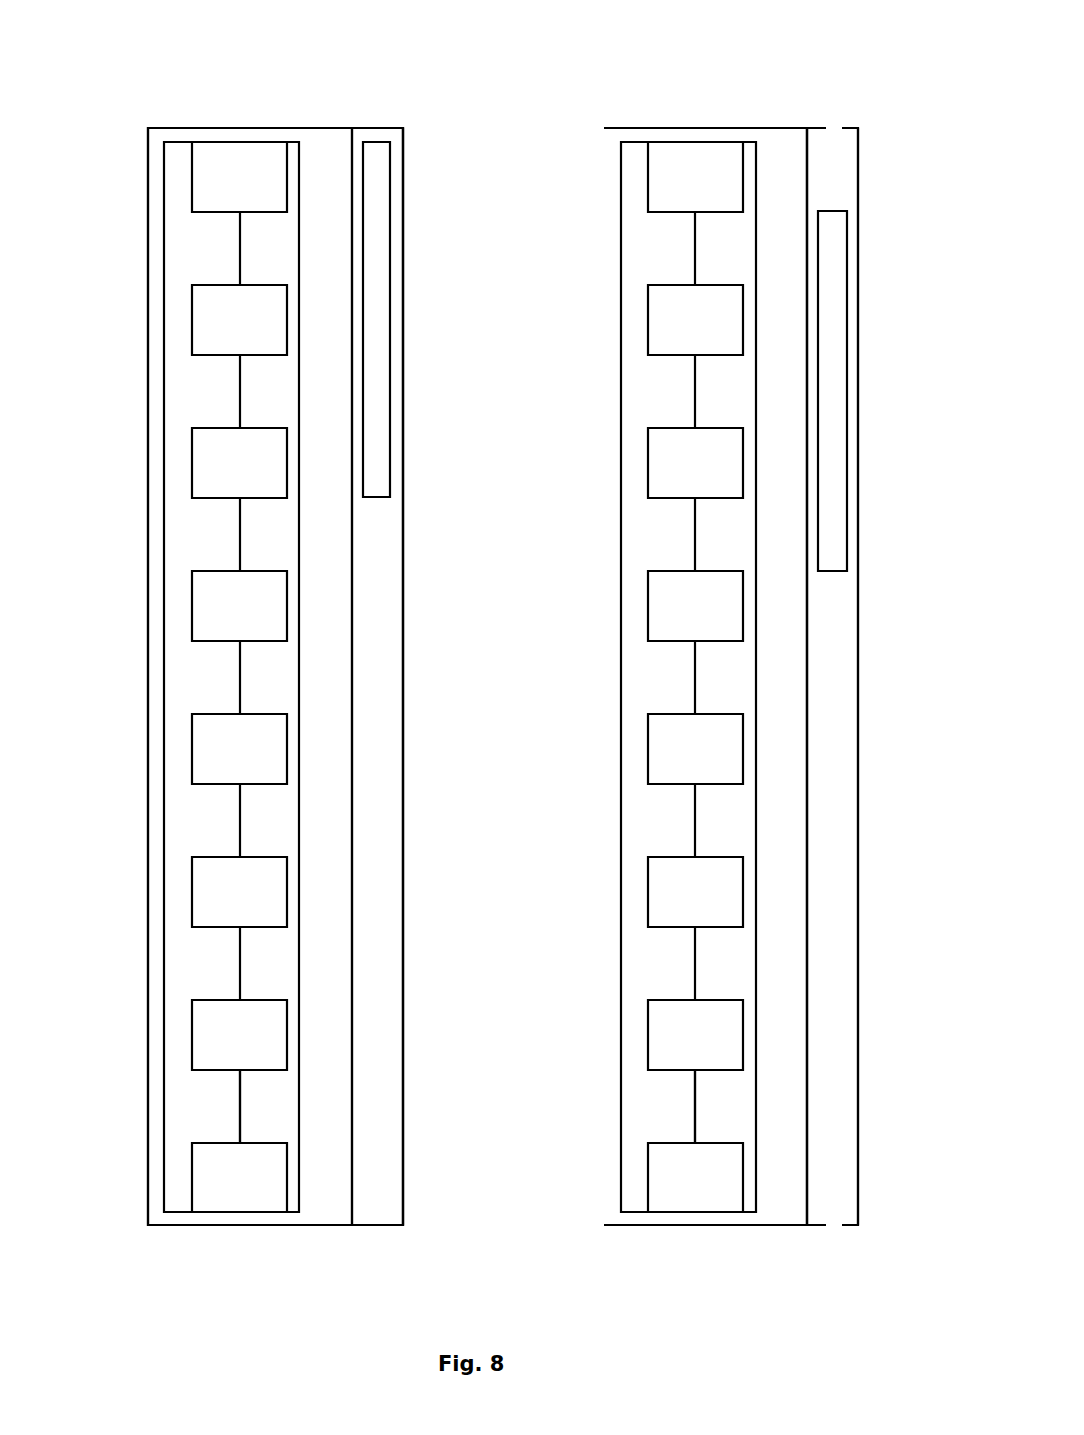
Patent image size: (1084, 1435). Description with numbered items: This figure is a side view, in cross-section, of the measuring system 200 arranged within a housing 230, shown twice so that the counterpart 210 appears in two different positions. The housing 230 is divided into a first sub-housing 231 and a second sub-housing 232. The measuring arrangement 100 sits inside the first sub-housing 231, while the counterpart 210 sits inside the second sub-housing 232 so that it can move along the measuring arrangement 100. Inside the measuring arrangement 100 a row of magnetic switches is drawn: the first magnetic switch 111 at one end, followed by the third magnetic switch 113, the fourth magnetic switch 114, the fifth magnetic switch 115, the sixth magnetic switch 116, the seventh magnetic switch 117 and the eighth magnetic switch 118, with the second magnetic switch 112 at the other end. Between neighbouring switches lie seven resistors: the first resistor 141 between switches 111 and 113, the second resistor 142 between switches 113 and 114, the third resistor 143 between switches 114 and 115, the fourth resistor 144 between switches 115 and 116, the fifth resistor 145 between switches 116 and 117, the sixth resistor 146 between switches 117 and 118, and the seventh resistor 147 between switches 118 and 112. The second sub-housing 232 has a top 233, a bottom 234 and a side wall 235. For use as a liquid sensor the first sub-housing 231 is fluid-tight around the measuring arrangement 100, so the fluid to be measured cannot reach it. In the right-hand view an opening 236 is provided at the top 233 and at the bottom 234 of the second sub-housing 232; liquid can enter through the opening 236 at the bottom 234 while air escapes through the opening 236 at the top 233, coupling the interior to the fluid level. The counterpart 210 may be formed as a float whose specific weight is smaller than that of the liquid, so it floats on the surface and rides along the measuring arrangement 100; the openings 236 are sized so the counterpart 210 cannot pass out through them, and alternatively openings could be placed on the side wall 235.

The measuring system 200 is at (138, 38).
The housing 230 is at (283, 1240).
The measuring arrangement 100 is at (178, 152).
The top 233 is at (382, 128).
The bottom 234 is at (380, 1226).
The opening 236 is at (832, 128).
The second sub-housing 232 is at (392, 785).
The side wall 235 is at (405, 1028).
The counterpart 210 is at (378, 452).
The first magnetic switch 111 is at (261, 191).
The second magnetic switch 112 is at (261, 1192).
The third magnetic switch 113 is at (261, 334).
The fourth magnetic switch 114 is at (261, 477).
The fifth magnetic switch 115 is at (261, 620).
The sixth magnetic switch 116 is at (261, 763).
The seventh magnetic switch 117 is at (261, 906).
The eighth magnetic switch 118 is at (261, 1049).
The first resistor 141 is at (203, 255).
The second resistor 142 is at (203, 396).
The third resistor 143 is at (203, 539).
The fourth resistor 144 is at (203, 682).
The fifth resistor 145 is at (203, 825).
The sixth resistor 146 is at (203, 967).
The seventh resistor 147 is at (203, 1110).
The first sub-housing 231 is at (255, 1107).